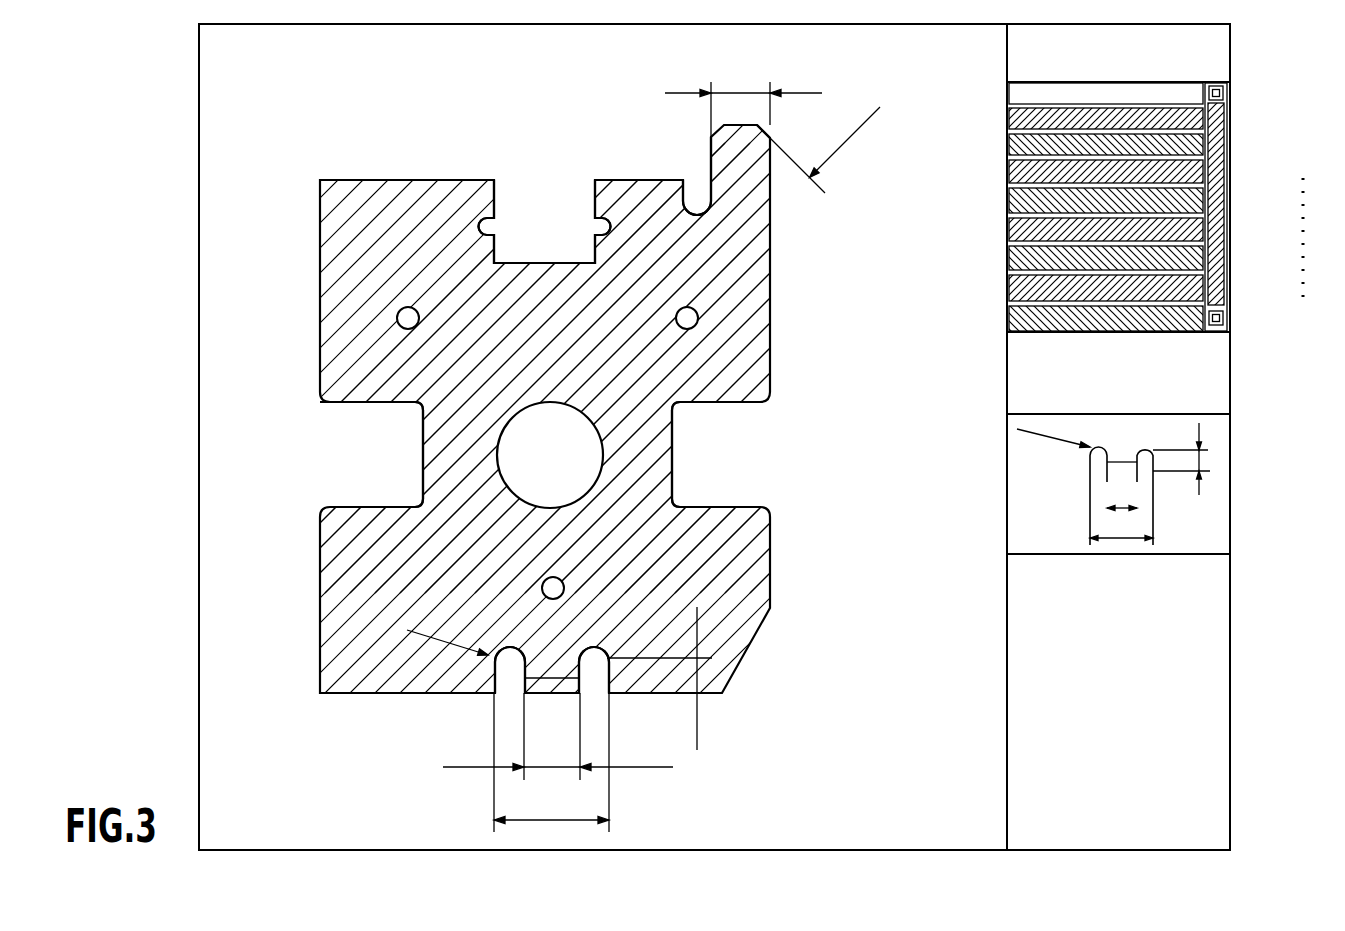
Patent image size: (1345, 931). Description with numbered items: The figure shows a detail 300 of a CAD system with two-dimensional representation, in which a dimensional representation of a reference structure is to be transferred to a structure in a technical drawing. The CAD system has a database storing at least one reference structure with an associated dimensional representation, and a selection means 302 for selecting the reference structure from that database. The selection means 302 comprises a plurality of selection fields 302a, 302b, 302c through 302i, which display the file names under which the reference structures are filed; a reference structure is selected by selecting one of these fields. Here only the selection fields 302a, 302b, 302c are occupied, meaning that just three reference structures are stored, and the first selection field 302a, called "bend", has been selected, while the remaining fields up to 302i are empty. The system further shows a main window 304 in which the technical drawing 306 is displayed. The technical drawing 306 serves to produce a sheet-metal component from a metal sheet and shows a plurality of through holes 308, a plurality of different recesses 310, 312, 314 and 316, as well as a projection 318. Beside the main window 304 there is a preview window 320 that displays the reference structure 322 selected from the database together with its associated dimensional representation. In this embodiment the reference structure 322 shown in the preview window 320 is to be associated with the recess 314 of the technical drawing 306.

The detail 300 is at (200, 392).
The selection means 302 is at (1171, 186).
The selection field 302a is at (1185, 95).
The selection field 302b is at (1192, 120).
The selection field 302c is at (1192, 148).
The selection field 302i is at (1192, 320).
The main window 304 is at (225, 70).
The technical drawing 306 is at (762, 652).
The through holes 308 is at (397, 318).
The recess 310 is at (365, 402).
The recess 312 is at (497, 198).
The recess 314 is at (553, 678).
The recess 316 is at (703, 205).
The projection 318 is at (772, 140).
The preview window 320 is at (1217, 497).
The reference structure 322 is at (1080, 487).